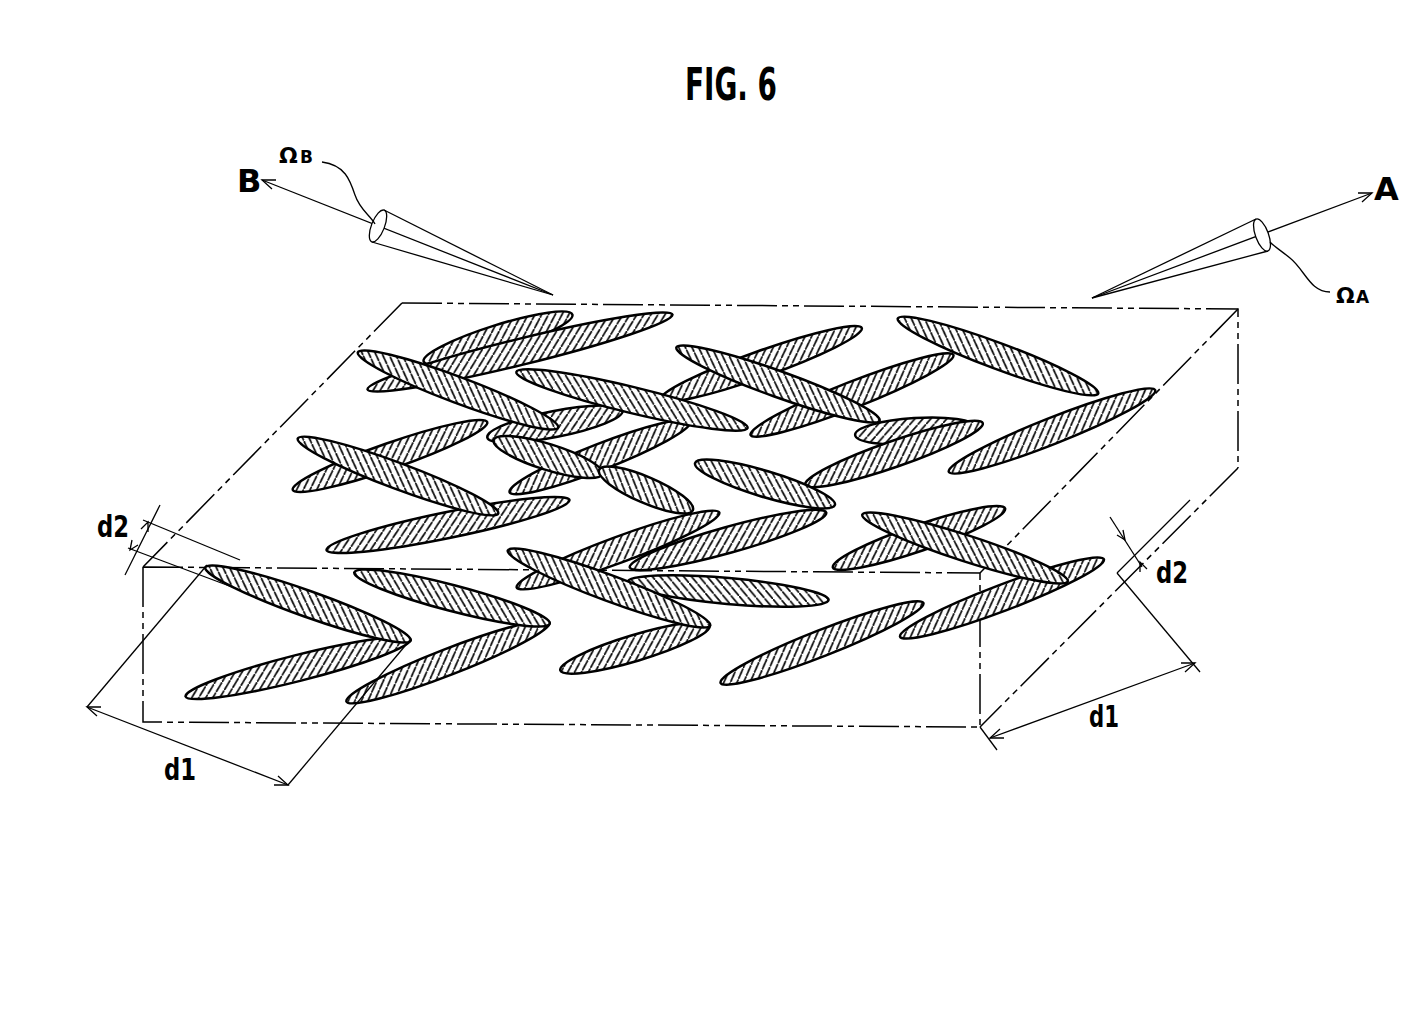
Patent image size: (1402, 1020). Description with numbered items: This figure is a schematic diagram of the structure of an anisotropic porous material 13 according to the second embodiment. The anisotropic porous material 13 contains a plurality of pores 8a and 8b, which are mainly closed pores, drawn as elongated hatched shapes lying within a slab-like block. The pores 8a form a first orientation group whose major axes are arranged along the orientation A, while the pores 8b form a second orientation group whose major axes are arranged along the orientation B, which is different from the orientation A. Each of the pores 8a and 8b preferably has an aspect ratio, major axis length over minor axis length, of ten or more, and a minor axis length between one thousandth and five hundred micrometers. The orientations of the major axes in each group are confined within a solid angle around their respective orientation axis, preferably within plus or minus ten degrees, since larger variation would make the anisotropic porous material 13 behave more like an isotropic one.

The pores 8a is at (820, 333).
The pores 8b is at (327, 438).
The anisotropic porous material 13 is at (1240, 400).